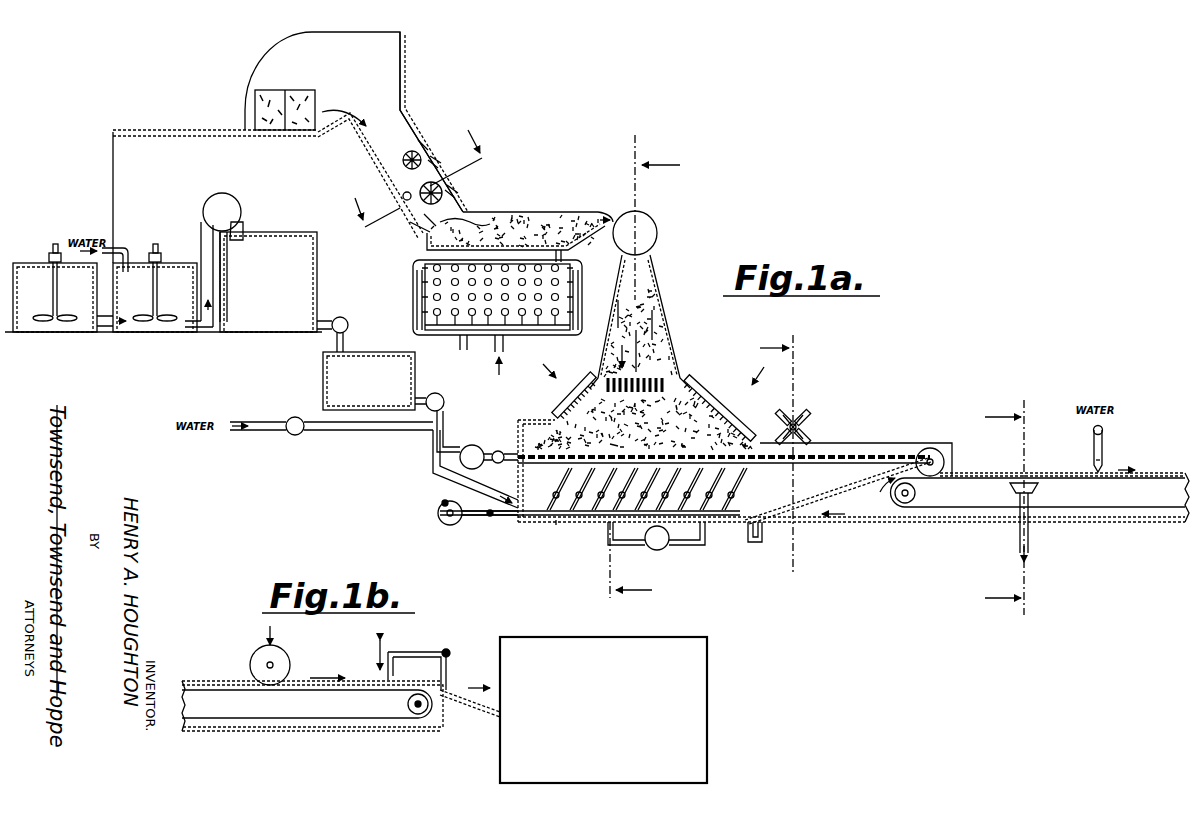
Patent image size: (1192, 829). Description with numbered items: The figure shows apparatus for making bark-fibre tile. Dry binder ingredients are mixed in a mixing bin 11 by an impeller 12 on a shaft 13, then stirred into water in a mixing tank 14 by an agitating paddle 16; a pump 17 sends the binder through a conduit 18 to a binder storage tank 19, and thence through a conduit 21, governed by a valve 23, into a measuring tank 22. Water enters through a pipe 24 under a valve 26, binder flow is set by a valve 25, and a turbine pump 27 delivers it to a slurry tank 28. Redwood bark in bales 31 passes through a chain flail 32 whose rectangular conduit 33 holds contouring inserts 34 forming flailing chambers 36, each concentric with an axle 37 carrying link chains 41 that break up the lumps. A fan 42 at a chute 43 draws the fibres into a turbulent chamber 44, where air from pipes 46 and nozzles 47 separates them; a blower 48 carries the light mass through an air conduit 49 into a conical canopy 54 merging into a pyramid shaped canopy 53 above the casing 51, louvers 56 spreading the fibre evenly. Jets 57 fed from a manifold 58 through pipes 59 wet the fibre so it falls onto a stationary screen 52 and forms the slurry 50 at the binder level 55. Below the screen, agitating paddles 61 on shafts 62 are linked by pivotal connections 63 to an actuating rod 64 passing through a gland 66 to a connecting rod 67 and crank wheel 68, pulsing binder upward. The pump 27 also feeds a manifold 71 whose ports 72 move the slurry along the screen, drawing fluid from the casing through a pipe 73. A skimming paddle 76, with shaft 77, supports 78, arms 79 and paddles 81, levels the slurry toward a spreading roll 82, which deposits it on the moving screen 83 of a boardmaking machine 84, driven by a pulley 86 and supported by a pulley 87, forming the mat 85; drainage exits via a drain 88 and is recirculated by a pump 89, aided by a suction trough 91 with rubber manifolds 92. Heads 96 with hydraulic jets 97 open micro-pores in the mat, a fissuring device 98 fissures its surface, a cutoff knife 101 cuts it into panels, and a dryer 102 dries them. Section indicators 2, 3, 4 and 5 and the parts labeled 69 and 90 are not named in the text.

In FIG. 1A, the mixing bin 11 is at (18, 334).
In FIG. 1A, the impeller 12 is at (68, 334).
In FIG. 1A, the shaft 13 is at (50, 284).
In FIG. 1A, the mixing tank 14 is at (123, 334).
In FIG. 1A, the agitating paddle 16 is at (168, 334).
In FIG. 1A, the pump 17 is at (236, 197).
In FIG. 1A, the conduit 18 is at (200, 238).
In FIG. 1A, the binder storage tank 19 is at (250, 334).
In FIG. 1A, the conduit 21 is at (346, 341).
In FIG. 1A, the measuring tank 22 is at (323, 383).
In FIG. 1A, the valve 23 is at (349, 322).
In FIG. 1A, the pipe 24 is at (345, 432).
In FIG. 1A, the valve 25 is at (443, 397).
In FIG. 1A, the valve 26 is at (292, 436).
In FIG. 1A, the turbine pump 27 is at (470, 446).
In FIG. 1A, the slurry tank 28 is at (528, 528).
In FIG. 1A, the bales 31 is at (300, 89).
In FIG. 1A, the chain flail 32 is at (372, 166).
In FIG. 1A, the conduit 33 is at (410, 116).
In FIG. 1A, the contouring inserts 34 is at (436, 164).
In FIG. 1A, the flailing chambers 36 is at (403, 194).
In FIG. 1A, the axle 37 is at (403, 160).
In FIG. 1A, the link chains 41 is at (424, 142).
In FIG. 1A, the fan 42 is at (490, 213).
In FIG. 1A, the chute 43 is at (478, 214).
In FIG. 1A, the turbulent chamber 44 is at (540, 222).
In FIG. 1A, the pipes 46 is at (471, 368).
In FIG. 1A, the nozzles 47 is at (417, 302).
In FIG. 1A, the blower 48 is at (658, 237).
In FIG. 1A, the air conduit 49 is at (660, 270).
In FIG. 1A, the slurry 50 is at (790, 462).
In FIG. 1A, the casing 51 is at (560, 522).
In FIG. 1A, the screen 52 is at (744, 464).
In FIG. 1A, the truncated pyramid shaped canopy 53 is at (688, 376).
In FIG. 1A, the truncated conical canopy 54 is at (673, 334).
In FIG. 1A, the liquid binder level 55 is at (664, 447).
In FIG. 1A, the louvers 56 is at (660, 414).
In FIG. 1A, the jets 57 is at (605, 395).
In FIG. 1A, the manifold 58 is at (553, 404).
In FIG. 1A, the pipes 59 is at (550, 390).
In FIG. 1A, the agitating paddles 61 is at (593, 497).
In FIG. 1A, the shaft 62 is at (572, 496).
In FIG. 1A, the pivotal connections 63 is at (706, 528).
In FIG. 1A, the actuating rod 64 is at (596, 525).
In FIG. 1A, the gland 66 is at (512, 518).
In FIG. 1A, the connecting rod 67 is at (478, 518).
In FIG. 1A, the crank wheel 68 is at (447, 526).
In FIG. 1A, the pipe 69 is at (560, 528).
In FIG. 1A, the manifold 71 is at (500, 450).
In FIG. 1A, the ports 72 is at (556, 430).
In FIG. 1A, the pipe 73 is at (446, 494).
In FIG. 1A, the skimming paddle 76 is at (818, 425).
In FIG. 1A, the shaft 77 is at (800, 416).
In FIG. 1A, the supports 78 is at (808, 438).
In FIG. 1A, the arms 79 is at (810, 418).
In FIG. 1A, the paddles 81 is at (786, 417).
In FIG. 1A, the spreading roll 82 is at (945, 462).
In FIG. 1A, the moving screen 83 is at (936, 484).
In FIG. 1B, the moving screen 83 is at (288, 692).
In FIG. 1A, the boardmaking machine 84 is at (922, 524).
In FIG. 1B, the boardmaking machine 84 is at (356, 730).
In FIG. 1A, the mat 85 is at (1148, 482).
In FIG. 1B, the mat 85 is at (222, 683).
In FIG. 1B, the pulley 86 is at (406, 704).
In FIG. 1A, the pulley 87 is at (884, 498).
In FIG. 1A, the drain 88 is at (762, 540).
In FIG. 1A, the pump 89 is at (660, 550).
In FIG. 1B, the press roller 90 is at (292, 666).
In FIG. 1A, the suction troughs 91 is at (1028, 470).
In FIG. 1A, the rubber manifolds 92 is at (1036, 490).
In FIG. 1A, the heads 96 is at (1106, 438).
In FIG. 1A, the hydraulic jets 97 is at (1105, 462).
In FIG. 1B, the fissuring device 98 is at (255, 632).
In FIG. 1B, the cutoff knife 101 is at (447, 651).
In FIG. 1B, the dryer 102 is at (600, 641).
In FIG. 1A, the section line 2- 2 is at (651, 367).
In FIG. 1A, the section line 3- 3 is at (414, 178).
In FIG. 1A, the section line 4- 4 is at (776, 457).
In FIG. 1A, the section line 5- 5 is at (1004, 509).